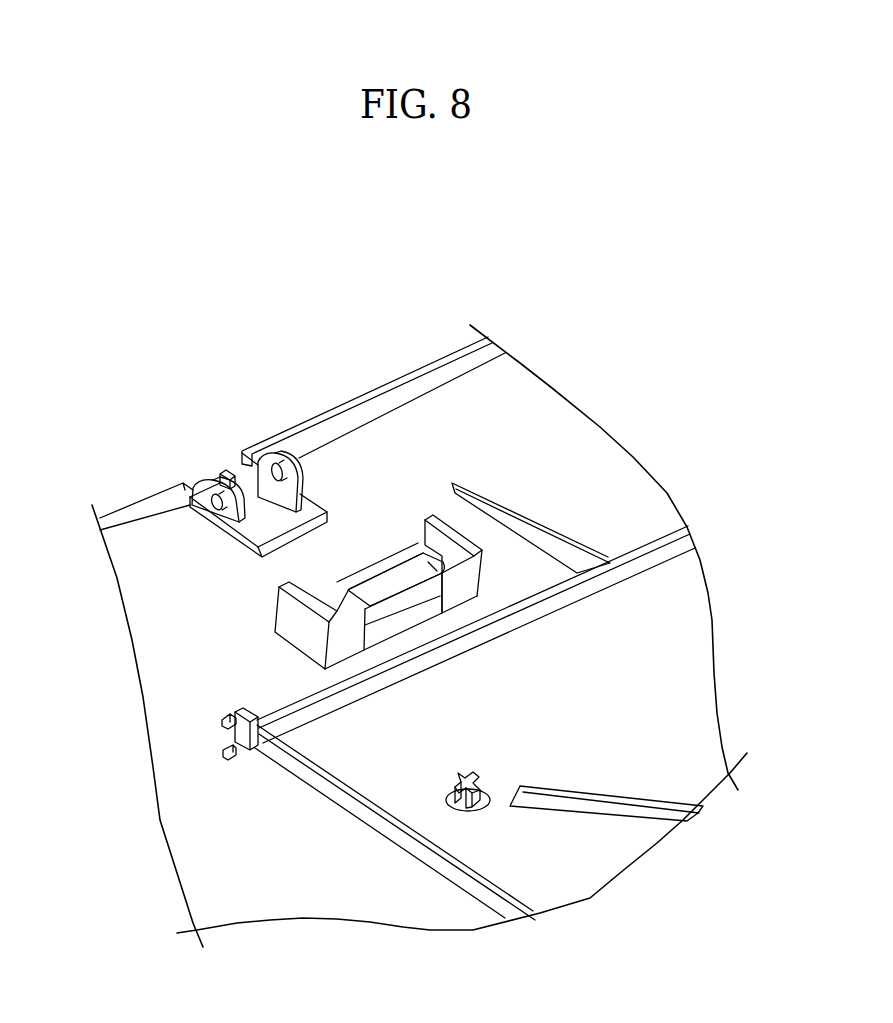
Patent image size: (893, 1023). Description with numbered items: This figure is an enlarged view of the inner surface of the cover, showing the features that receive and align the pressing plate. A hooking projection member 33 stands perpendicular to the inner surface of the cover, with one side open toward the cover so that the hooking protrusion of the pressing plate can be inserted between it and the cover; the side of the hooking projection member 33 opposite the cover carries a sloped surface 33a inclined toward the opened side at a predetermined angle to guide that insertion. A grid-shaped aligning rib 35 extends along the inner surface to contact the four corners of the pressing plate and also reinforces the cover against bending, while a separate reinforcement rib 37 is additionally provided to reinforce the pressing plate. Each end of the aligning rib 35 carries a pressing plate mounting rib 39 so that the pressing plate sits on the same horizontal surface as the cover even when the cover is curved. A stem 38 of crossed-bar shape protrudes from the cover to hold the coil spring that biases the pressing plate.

The hooking projection member 33 is at (481, 511).
The sloped surface 33a is at (395, 585).
The aligning rib 35 is at (397, 673).
The reinforcement rib 37 is at (677, 813).
The stem 38 is at (483, 772).
The pressing plate mounting rib 39 is at (223, 749).